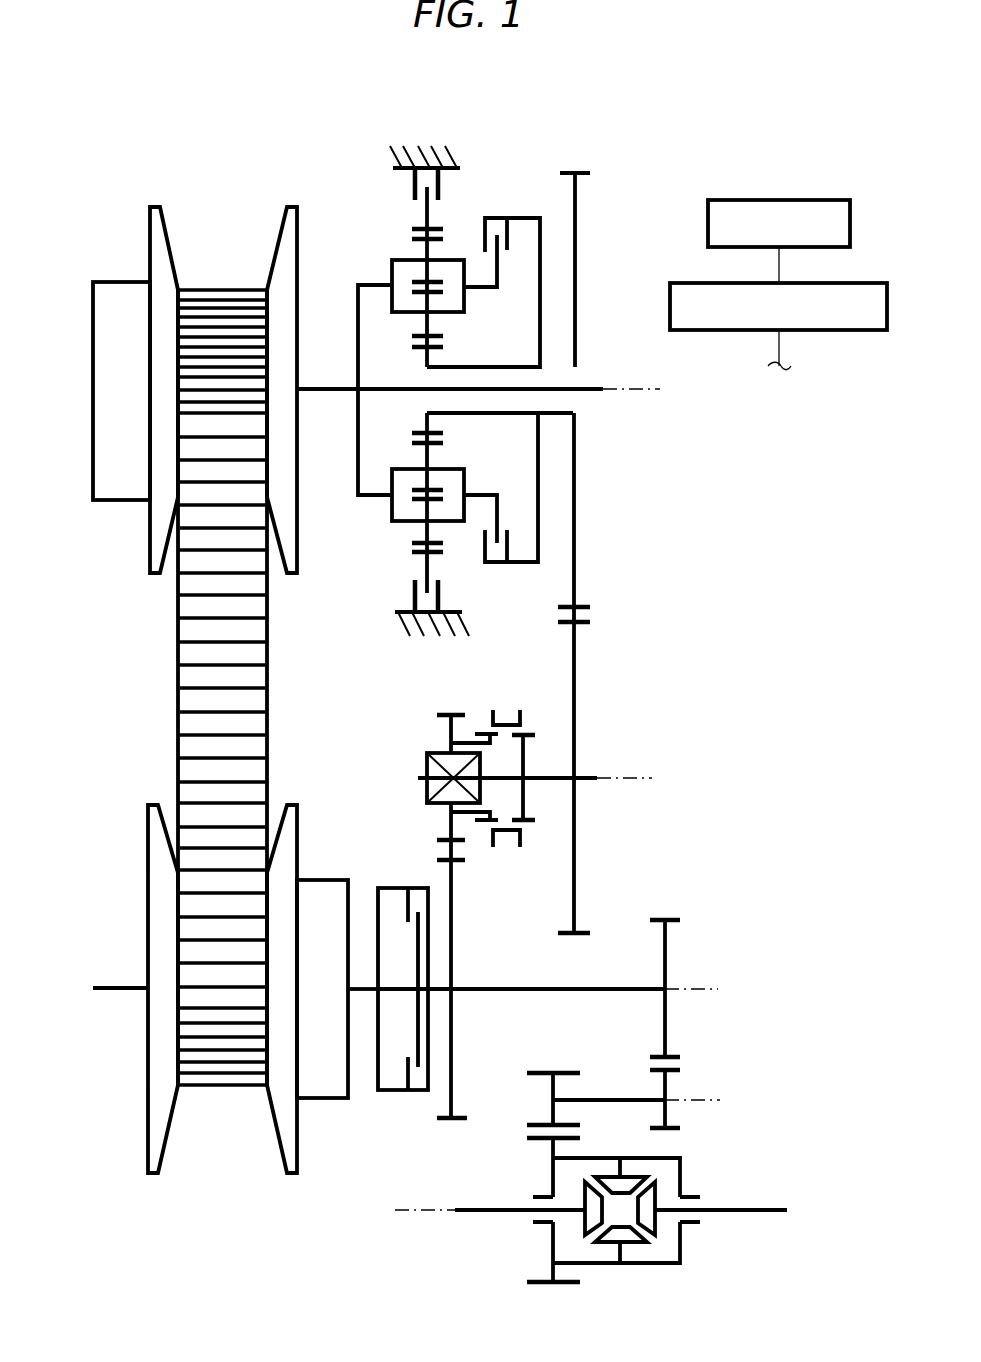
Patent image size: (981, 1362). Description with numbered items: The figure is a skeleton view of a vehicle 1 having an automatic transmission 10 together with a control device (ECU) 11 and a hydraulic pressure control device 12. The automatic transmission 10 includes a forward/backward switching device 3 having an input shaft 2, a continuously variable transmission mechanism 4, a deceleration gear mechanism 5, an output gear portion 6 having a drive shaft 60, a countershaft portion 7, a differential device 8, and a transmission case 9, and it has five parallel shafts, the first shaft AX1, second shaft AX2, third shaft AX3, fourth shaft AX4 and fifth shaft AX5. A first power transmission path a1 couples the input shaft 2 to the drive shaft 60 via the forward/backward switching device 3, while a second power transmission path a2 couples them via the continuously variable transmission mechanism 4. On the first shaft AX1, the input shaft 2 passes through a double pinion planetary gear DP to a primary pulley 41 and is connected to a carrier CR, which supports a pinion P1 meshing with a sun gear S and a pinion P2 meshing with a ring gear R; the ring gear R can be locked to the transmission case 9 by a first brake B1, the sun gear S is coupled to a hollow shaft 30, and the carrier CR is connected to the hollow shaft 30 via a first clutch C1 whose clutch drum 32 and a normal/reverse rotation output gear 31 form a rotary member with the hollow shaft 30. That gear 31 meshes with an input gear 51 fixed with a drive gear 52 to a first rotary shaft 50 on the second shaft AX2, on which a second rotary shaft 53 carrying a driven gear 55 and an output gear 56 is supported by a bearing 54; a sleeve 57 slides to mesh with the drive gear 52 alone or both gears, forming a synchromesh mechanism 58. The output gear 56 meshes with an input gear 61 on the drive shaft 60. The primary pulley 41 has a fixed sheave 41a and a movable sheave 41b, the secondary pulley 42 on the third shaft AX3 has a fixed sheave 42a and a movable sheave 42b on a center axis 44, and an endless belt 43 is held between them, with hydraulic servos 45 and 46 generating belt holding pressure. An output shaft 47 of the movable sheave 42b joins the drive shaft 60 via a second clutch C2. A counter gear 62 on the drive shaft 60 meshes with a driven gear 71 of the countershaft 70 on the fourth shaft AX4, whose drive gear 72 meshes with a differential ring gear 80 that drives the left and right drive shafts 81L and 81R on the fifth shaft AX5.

The vehicle 1 is at (759, 96).
The input shaft 2 is at (590, 389).
The forward/backward switching device 3 is at (519, 163).
The continuously variable transmission mechanism 4 is at (94, 178).
The deceleration gear mechanism 5 is at (640, 671).
The output gear portion 6 is at (683, 896).
The countershaft portion 7 is at (708, 1079).
The differential device 8 is at (733, 1181).
The transmission case 9 is at (396, 170).
The automatic transmission 10 is at (630, 154).
The control device (ECU) 11 is at (838, 197).
The hydraulic pressure control device 12 is at (838, 330).
The hollow shaft 30 is at (556, 413).
The normal/reverse rotation output gear 31 is at (580, 600).
The clutch drum 32 is at (538, 472).
The primary pulley 41 is at (223, 343).
The fixed sheave 41a is at (268, 369).
The movable sheave 41b is at (167, 225).
The secondary pulley 42 is at (222, 1039).
The fixed sheave 42a is at (167, 1150).
The movable sheave 42b is at (267, 1013).
The endless belt 43 is at (178, 650).
The center axis 44 is at (112, 992).
The hydraulic servo 45 is at (117, 505).
The hydraulic servo 46 is at (330, 1103).
The output shaft 47 is at (365, 992).
The first rotary shaft 50 is at (588, 778).
The input gear 51 is at (580, 920).
The drive gear 52 is at (527, 735).
The second rotary shaft 53 is at (433, 753).
The bearing 54 is at (427, 793).
The driven gear 55 is at (478, 733).
The output gear 56 is at (447, 715).
The sleeve 57 is at (508, 848).
The synchromesh mechanism 58 is at (511, 693).
The drive shaft 60 is at (507, 985).
The input gear 61 is at (455, 1120).
The counter gear 62 is at (655, 918).
The countershaft 70 is at (610, 1098).
The driven gear 71 is at (672, 1130).
The drive gear 72 is at (560, 1072).
The differential ring gear 80 is at (533, 1140).
The left drive shaft 81L is at (467, 1212).
The right drive shaft 81R is at (757, 1212).
The first power transmission path a1 is at (665, 576).
The second power transmission path a2 is at (132, 729).
The first brake B1 is at (440, 196).
The first clutch C1 is at (497, 218).
The second clutch C2 is at (408, 890).
The carrier CR is at (358, 350).
The planetary gear DP is at (452, 320).
The pinion P1 is at (435, 332).
The pinion P2 is at (415, 533).
The ring gear R is at (415, 558).
The sun gear S is at (420, 347).
The first shaft AX1 is at (656, 389).
The second shaft AX2 is at (648, 780).
The third shaft AX3 is at (716, 989).
The fourth shaft AX4 is at (717, 1100).
The fifth shaft AX5 is at (400, 1211).